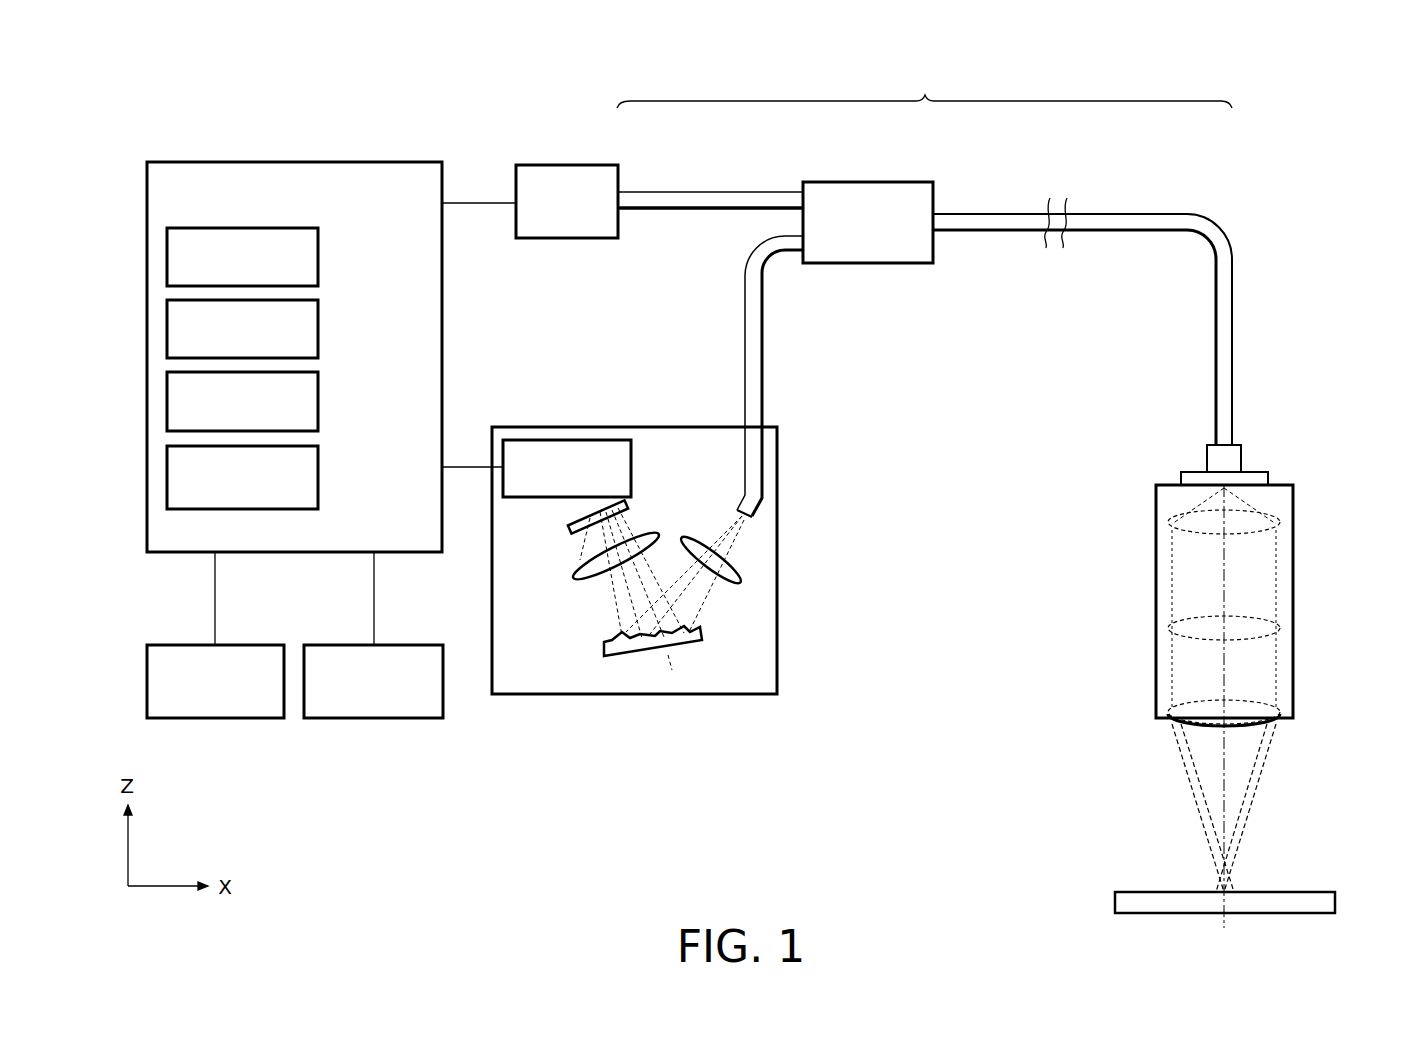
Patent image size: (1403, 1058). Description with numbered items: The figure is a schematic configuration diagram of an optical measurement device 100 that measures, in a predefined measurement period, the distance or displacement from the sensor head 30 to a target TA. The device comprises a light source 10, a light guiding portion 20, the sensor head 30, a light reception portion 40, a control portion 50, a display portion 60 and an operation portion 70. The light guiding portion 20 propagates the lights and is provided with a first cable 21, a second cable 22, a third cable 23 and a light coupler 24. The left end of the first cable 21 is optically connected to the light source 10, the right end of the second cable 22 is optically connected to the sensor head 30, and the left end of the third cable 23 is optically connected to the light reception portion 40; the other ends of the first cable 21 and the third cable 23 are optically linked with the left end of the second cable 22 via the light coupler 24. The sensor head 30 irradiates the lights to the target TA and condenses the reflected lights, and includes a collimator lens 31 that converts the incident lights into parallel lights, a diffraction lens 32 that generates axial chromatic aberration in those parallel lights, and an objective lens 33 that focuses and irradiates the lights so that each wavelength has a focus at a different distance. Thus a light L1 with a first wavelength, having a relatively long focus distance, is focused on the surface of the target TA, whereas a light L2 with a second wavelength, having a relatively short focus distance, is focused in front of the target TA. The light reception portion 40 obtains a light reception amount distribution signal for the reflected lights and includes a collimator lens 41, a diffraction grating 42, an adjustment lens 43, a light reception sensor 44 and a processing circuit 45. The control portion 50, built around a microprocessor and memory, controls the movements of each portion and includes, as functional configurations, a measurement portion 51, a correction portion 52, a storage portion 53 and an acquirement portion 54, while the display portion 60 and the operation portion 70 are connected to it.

The optical measurement device 100 is at (1356, 67).
The light source 10 is at (563, 163).
The light guiding portion 20 is at (924, 88).
The first cable 21 is at (705, 188).
The second cable 22 is at (1165, 212).
The third cable 23 is at (765, 355).
The light coupler 24 is at (870, 180).
The sensor head 30 is at (1244, 670).
The collimator lens 31 is at (1295, 518).
The diffraction lens 32 is at (1295, 625).
The objective lens 33 is at (1295, 714).
The light reception portion 40 is at (660, 425).
The collimator lens 41 is at (748, 575).
The diffraction grating 42 is at (705, 642).
The adjustment lens 43 is at (586, 568).
The light reception sensor 44 is at (570, 526).
The processing circuit 45 is at (633, 474).
The control portion 50 is at (292, 160).
The measurement portion 51 is at (320, 253).
The correction portion 52 is at (320, 326).
The storage portion 53 is at (320, 400).
The acquirement portion 54 is at (320, 473).
The display portion 60 is at (372, 718).
The operation portion 70 is at (215, 718).
The light with a first wavelength L1 is at (1213, 860).
The light with a second wavelength L2 is at (1210, 831).
The target TA is at (1113, 902).